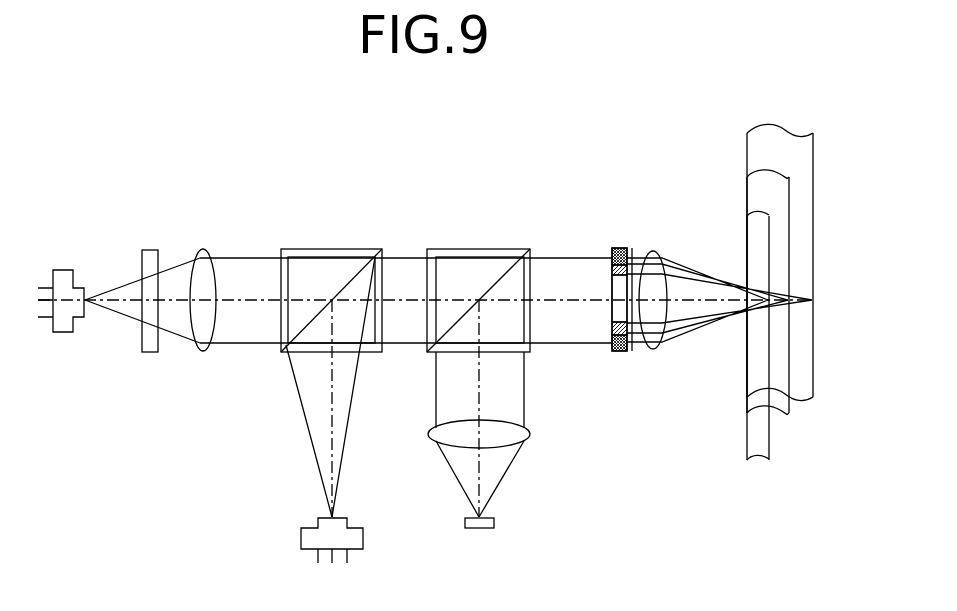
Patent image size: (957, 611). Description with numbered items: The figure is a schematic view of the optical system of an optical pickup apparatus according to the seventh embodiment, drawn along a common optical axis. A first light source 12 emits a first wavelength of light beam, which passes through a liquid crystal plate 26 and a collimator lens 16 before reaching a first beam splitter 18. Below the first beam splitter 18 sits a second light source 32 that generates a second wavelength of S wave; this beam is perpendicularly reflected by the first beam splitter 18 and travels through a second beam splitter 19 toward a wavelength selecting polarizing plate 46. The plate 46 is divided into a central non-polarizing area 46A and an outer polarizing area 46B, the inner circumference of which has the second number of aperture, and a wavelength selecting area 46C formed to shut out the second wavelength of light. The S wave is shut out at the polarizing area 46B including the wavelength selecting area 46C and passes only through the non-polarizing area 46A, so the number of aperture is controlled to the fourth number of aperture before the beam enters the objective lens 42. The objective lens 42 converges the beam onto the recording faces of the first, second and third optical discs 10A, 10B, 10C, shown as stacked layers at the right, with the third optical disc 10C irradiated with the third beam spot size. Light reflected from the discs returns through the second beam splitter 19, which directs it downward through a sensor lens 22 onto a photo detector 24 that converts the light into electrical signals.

The first light source 12 is at (65, 273).
The liquid crystal plate 26 is at (152, 250).
The collimator lens 16 is at (204, 252).
The first beam splitter 18 is at (360, 250).
The second beam splitter 19 is at (503, 249).
The wavelength selecting polarizing plate 46 is at (625, 248).
The non-polarizing area 46A is at (614, 312).
The polarizing area 46B is at (612, 266).
The wavelength selecting area 46C is at (621, 351).
The objective lens 42 is at (656, 252).
The first optical disc 10A is at (760, 437).
The second optical disc 10B is at (783, 272).
The third optical disc 10C is at (803, 212).
The sensor lens 22 is at (530, 434).
The photo detector 24 is at (494, 523).
The second light source 32 is at (363, 535).